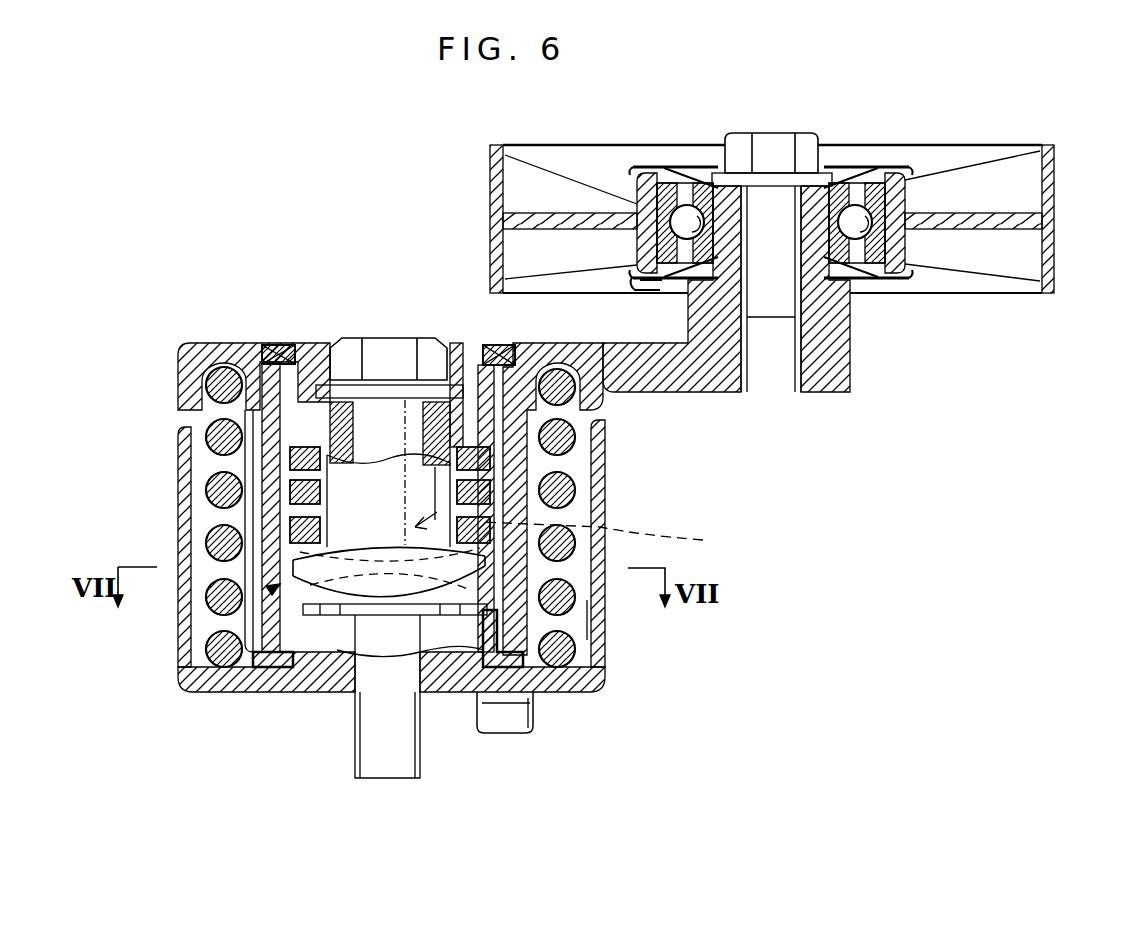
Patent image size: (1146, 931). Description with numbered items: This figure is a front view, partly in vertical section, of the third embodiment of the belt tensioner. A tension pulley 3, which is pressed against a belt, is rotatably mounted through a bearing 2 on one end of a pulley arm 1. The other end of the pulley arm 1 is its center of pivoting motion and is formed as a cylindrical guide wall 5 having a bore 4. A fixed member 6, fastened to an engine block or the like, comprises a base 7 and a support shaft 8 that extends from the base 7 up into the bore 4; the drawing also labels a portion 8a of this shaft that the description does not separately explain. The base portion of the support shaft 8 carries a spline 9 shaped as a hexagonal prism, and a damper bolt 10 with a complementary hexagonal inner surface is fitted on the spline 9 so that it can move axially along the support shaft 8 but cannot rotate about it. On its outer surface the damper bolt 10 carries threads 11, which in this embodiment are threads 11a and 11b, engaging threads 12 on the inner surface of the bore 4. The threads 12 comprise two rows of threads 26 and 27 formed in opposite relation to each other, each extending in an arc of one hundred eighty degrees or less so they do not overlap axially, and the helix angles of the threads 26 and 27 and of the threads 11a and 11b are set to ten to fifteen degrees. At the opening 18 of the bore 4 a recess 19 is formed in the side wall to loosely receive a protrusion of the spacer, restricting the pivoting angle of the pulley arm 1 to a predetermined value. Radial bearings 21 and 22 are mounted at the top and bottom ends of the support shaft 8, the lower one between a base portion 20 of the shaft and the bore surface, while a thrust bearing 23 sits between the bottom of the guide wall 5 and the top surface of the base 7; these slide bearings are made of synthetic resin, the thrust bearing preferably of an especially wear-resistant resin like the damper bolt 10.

The pulley arm 1 is at (718, 373).
The bearing 2 is at (852, 190).
The tension pulley 3 is at (1054, 188).
The bore 4 is at (520, 458).
The cylindrical guide wall 5 is at (505, 493).
The fixed member 6 is at (219, 690).
The base 7 is at (273, 680).
The support shaft 8 is at (343, 463).
The lower shaft portion 8a is at (452, 620).
The spline 9 is at (380, 357).
The damper bolt 10 is at (532, 735).
The threads 11 is at (333, 612).
The threads 11a is at (430, 618).
The threads 11b is at (523, 640).
The threads 12 is at (275, 588).
The opening 18 is at (308, 347).
The recess 19 is at (317, 493).
The base portion 20 is at (468, 360).
The bearing 21 is at (513, 718).
The bearing 22 is at (540, 710).
The bearing 23 is at (590, 615).
The threads 26 is at (300, 560).
The threads 27 is at (585, 581).